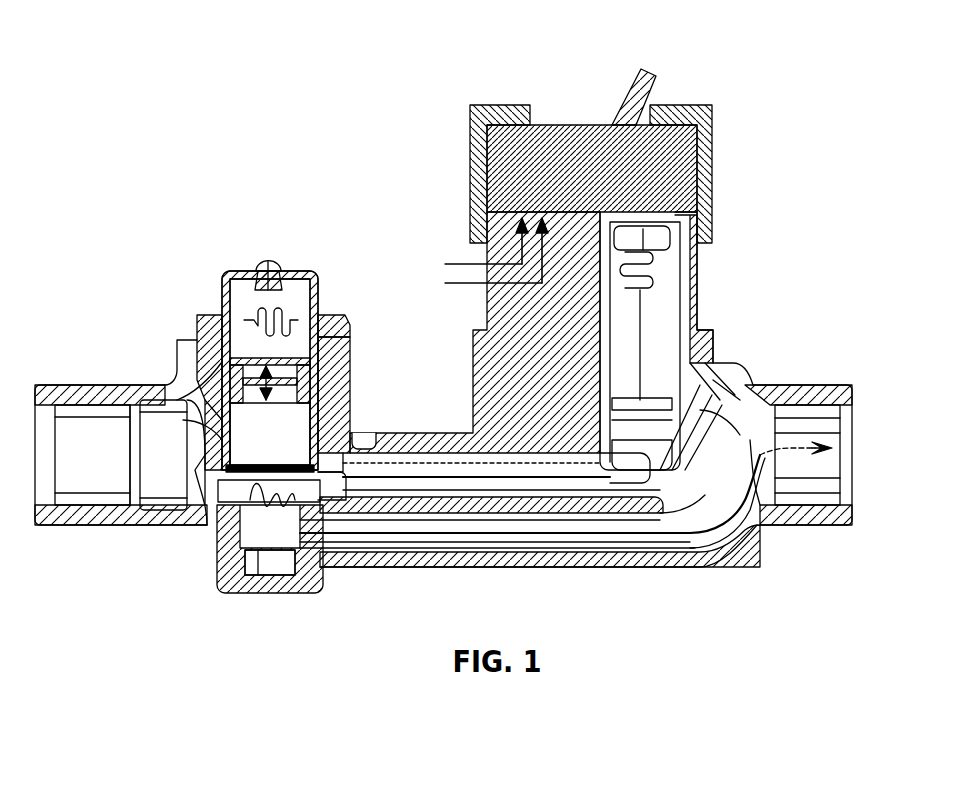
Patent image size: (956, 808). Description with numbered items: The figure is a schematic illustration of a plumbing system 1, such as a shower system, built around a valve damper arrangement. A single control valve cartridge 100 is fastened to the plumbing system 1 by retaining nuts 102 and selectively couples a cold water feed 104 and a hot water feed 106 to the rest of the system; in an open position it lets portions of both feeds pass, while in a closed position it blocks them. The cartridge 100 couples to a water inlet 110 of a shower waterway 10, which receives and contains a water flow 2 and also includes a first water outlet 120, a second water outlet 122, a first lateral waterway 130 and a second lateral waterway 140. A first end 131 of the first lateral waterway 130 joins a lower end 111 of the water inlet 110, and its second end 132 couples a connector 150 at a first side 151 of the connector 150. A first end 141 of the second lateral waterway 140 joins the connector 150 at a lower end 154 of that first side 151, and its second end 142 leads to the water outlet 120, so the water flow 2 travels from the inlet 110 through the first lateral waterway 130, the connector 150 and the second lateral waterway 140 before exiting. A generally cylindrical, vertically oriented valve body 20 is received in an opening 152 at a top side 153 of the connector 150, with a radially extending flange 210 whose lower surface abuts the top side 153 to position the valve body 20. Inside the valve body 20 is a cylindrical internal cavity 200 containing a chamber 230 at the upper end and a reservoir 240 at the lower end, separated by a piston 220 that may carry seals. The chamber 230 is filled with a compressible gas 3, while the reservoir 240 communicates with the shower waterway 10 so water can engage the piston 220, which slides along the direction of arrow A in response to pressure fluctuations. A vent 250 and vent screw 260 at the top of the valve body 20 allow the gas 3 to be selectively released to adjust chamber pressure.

The plumbing system 1 is at (778, 196).
The water flow 2 is at (483, 535).
The compressible gas 3 is at (252, 322).
The shower waterway 10 is at (703, 360).
The valve body 20 is at (335, 318).
The single control valve cartridge 100 is at (556, 138).
The retaining nuts 102 is at (472, 150).
The cold water feed 104 is at (445, 264).
The hot water feed 106 is at (473, 283).
The water inlet 110 is at (660, 272).
The lower end 111 is at (627, 412).
The first water outlet 120 is at (818, 430).
The second water outlet 122 is at (85, 433).
The first lateral waterway 130 is at (470, 473).
The first end 131 is at (577, 470).
The second end 132 is at (374, 452).
The second lateral waterway 140 is at (560, 548).
The first end 141 is at (333, 542).
The second end 142 is at (657, 543).
The connector 150 is at (245, 533).
The first side 151 is at (358, 468).
The opening 152 is at (322, 436).
The top side 153 is at (215, 338).
The lower end 154 is at (305, 548).
The internal cavity 200 is at (227, 443).
The flange 210 is at (343, 342).
The piston 220 is at (335, 376).
The chamber 230 is at (300, 290).
The reservoir 240 is at (295, 418).
The vent 250 is at (262, 276).
The vent screw 260 is at (271, 263).
The arrow A is at (217, 363).